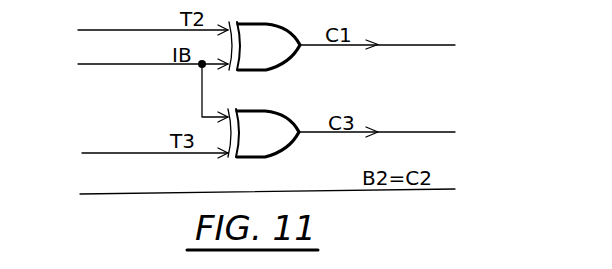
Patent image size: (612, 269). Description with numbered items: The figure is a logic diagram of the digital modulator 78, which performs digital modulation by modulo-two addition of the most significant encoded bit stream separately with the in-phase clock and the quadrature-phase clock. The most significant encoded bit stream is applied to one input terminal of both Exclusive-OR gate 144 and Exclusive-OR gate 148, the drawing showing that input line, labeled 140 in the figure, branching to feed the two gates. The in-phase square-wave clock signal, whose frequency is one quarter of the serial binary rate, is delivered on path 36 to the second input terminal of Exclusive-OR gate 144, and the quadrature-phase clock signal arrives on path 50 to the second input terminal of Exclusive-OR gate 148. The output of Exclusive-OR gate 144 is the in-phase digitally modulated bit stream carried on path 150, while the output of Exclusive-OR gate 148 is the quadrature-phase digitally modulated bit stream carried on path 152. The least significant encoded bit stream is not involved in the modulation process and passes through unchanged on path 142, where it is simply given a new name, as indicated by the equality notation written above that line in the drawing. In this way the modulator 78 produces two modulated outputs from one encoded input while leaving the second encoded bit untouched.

The path 36 is at (111, 27).
The input line IB 140 is at (116, 63).
The digital modulator 78 is at (280, 47).
The Exclusive-OR gate 144 is at (283, 70).
The path 150 is at (412, 32).
The input line T3 50 is at (118, 150).
The Exclusive-OR gate 148 is at (281, 157).
The path 152 is at (413, 120).
The path 142 is at (125, 193).